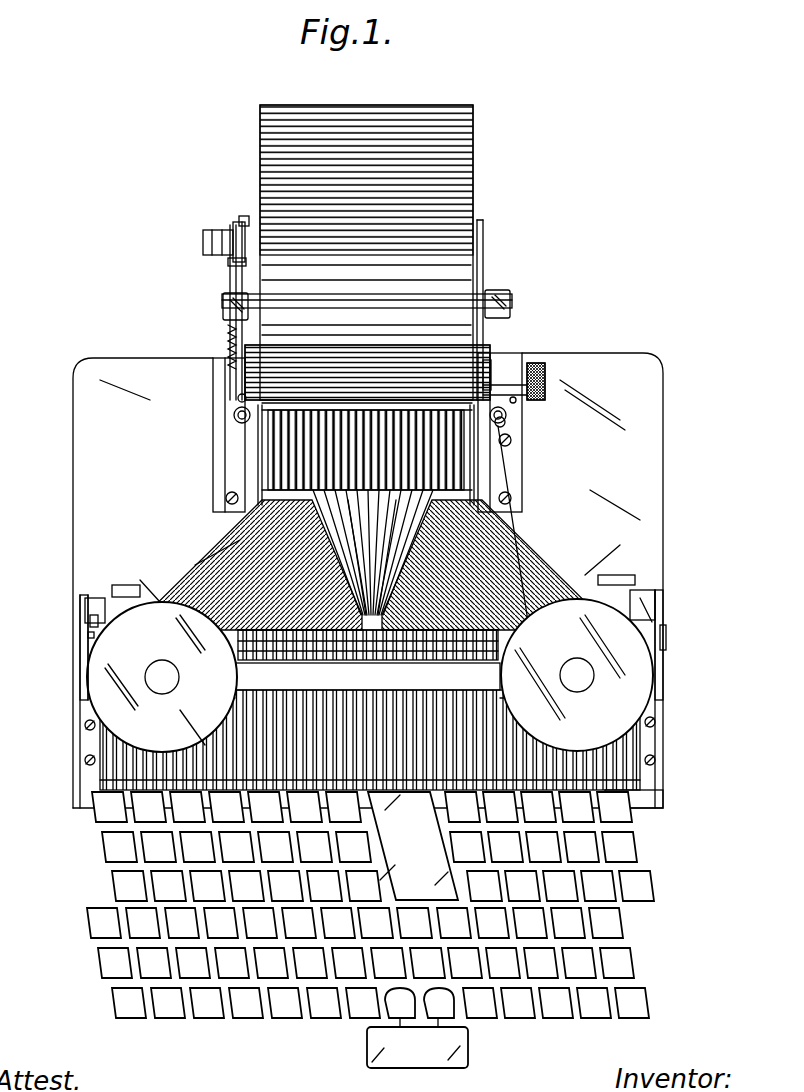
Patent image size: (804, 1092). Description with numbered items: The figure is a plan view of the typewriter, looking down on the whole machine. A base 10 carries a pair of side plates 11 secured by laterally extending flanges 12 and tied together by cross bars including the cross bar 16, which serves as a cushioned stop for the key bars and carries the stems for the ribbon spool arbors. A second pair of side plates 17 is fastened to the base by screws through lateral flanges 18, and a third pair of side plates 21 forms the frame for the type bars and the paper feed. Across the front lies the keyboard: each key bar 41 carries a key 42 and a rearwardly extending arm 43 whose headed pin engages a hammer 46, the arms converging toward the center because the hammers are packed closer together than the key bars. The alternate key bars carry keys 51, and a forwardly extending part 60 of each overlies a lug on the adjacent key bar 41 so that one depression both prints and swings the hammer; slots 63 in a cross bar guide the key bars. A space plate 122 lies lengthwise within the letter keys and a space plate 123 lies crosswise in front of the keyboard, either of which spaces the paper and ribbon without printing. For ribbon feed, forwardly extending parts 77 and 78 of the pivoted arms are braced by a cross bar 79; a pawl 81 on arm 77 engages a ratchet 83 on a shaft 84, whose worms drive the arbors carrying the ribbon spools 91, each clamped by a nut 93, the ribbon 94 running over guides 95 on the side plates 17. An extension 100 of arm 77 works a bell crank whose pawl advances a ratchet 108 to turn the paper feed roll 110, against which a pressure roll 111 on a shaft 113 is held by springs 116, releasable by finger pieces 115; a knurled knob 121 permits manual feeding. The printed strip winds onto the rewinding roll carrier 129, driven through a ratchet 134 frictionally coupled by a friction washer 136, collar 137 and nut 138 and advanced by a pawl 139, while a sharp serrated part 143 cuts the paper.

The base 10 is at (368, 580).
The side plate 11 is at (80, 680).
The laterally extending flange 12 is at (88, 598).
The cross bar 16 is at (367, 660).
The side plate 17 is at (257, 461).
The lateral flange 18 is at (218, 423).
The side plate 21 is at (484, 276).
The key bar 41 is at (105, 778).
The key 42 is at (102, 846).
The rearwardly extending arm 43 is at (205, 562).
The hammer 46 is at (268, 468).
The key 51 is at (634, 985).
The forwardly extending part 60 is at (125, 896).
The slot 63 is at (665, 800).
The forwardly extending part 77 is at (145, 580).
The forwardly extending part 78 is at (642, 598).
The cross bar 79 is at (113, 590).
The pawl 81 is at (90, 621).
The ratchet 83 is at (86, 635).
The shaft 84 is at (666, 641).
The ribbon spool 91 is at (370, 675).
The clamping nut 93 is at (168, 682).
The ribbon 94 is at (520, 556).
The guide 95 is at (504, 446).
The extension 100 is at (230, 449).
The ratchet 108 is at (238, 399).
The paper feed roll 110 is at (470, 393).
The pressure roll 111 is at (490, 368).
The shaft 113 is at (378, 350).
The finger piece 115 is at (224, 305).
The spring 116 is at (227, 343).
The knurled knob 121 is at (545, 366).
The space plate 122 is at (413, 846).
The space plate 123 is at (470, 1055).
The rewinding roll carrier 129 is at (475, 172).
The ratchet 134 is at (244, 216).
The friction washer 136 is at (232, 263).
The collar 137 is at (234, 232).
The nut 138 is at (203, 240).
The pawl 139 is at (231, 288).
The sharp serrated part 143 is at (314, 301).